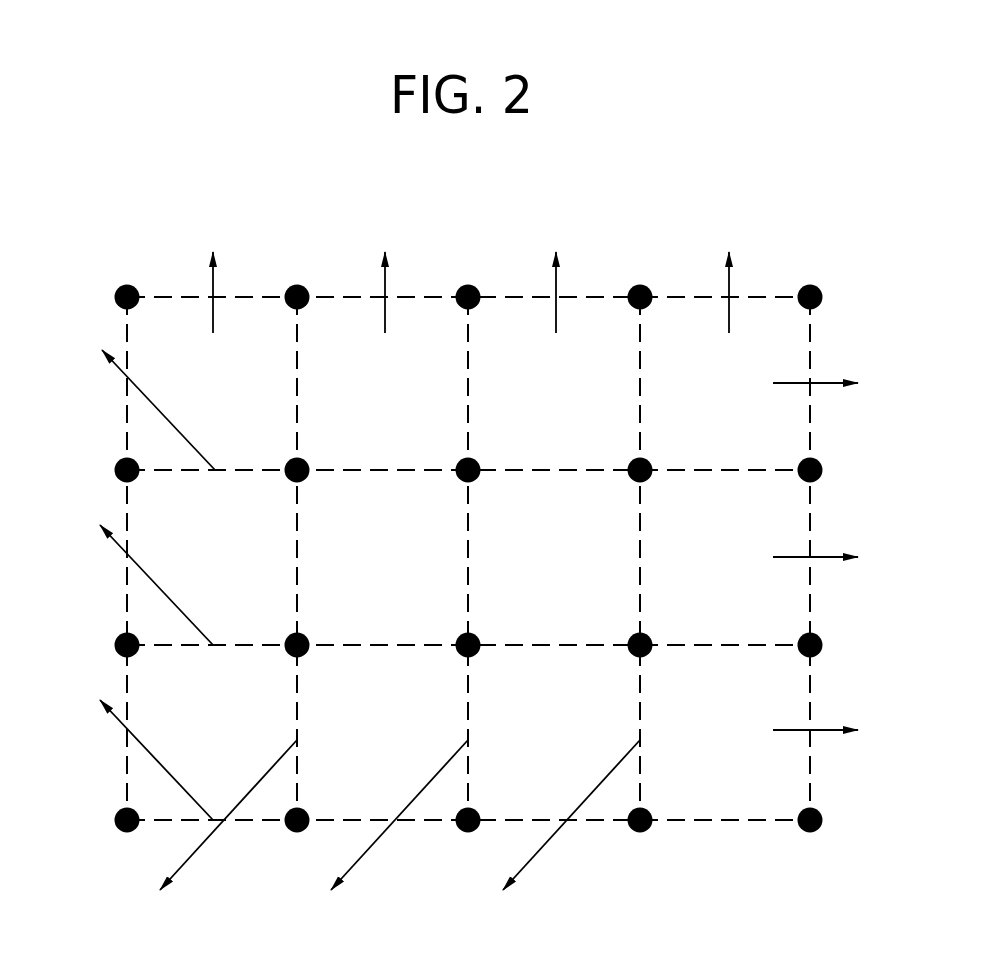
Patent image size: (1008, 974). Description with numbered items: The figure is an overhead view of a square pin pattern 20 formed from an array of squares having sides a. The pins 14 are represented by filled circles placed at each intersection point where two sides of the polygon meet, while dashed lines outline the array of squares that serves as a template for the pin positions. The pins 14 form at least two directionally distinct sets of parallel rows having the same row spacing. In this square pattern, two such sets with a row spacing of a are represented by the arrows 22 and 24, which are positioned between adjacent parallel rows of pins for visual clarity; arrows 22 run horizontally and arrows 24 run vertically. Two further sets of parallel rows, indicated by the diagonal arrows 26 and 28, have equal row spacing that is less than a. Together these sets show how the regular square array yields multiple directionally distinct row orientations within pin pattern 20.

The pin pattern 20 is at (678, 215).
The pins 14 is at (815, 848).
The arrows 22 is at (818, 385).
The arrows 24 is at (213, 290).
The arrows 26 is at (185, 863).
The arrows 28 is at (122, 372).